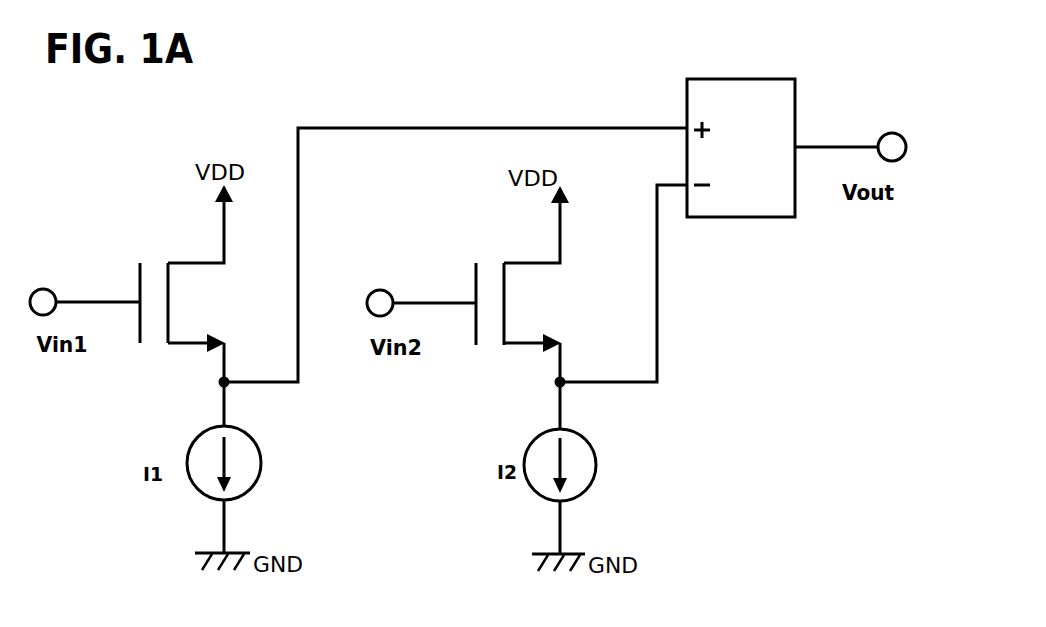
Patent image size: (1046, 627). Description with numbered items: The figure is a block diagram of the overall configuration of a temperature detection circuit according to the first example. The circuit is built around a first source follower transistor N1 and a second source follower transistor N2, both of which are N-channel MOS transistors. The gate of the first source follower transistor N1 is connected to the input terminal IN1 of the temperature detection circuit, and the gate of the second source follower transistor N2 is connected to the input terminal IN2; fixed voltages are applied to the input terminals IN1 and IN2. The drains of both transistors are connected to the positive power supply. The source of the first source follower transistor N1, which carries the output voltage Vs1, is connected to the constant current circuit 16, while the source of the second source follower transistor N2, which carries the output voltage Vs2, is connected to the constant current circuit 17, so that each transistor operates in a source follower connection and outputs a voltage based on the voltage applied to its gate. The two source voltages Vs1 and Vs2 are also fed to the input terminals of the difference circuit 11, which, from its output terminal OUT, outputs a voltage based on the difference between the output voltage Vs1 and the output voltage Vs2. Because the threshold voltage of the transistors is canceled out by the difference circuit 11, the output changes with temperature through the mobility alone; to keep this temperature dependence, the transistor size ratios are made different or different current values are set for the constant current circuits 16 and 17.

The difference circuit 11 is at (735, 78).
The constant current circuit 16 is at (263, 463).
The constant current circuit 17 is at (598, 477).
The first source follower transistor N1 is at (210, 307).
The second source follower transistor N2 is at (553, 310).
The input terminal IN1 is at (45, 289).
The input terminal IN2 is at (384, 290).
The output terminal OUT is at (879, 136).
The output voltage Vs1 is at (228, 378).
The output voltage Vs2 is at (563, 379).